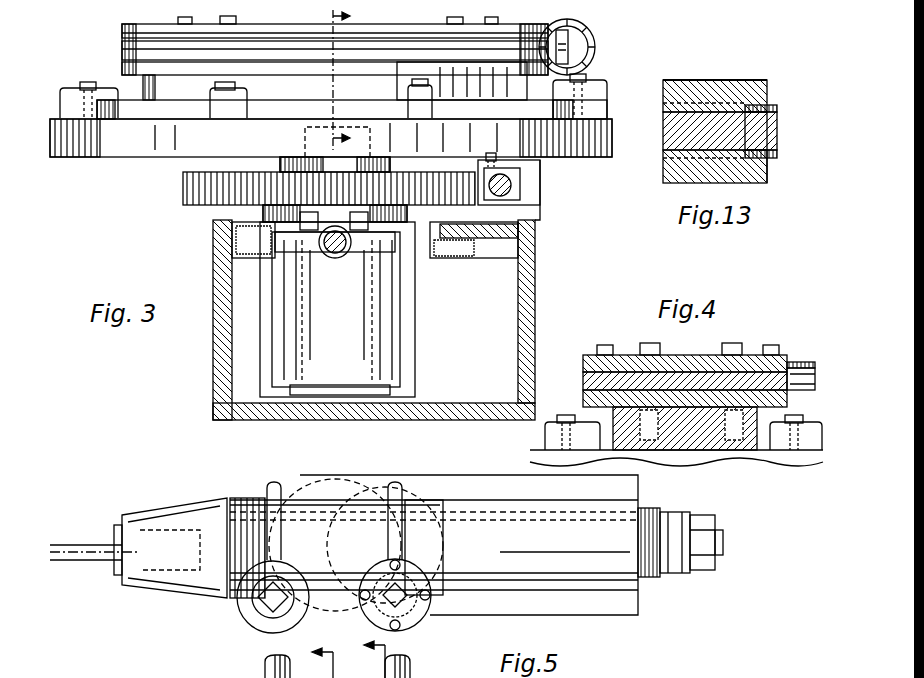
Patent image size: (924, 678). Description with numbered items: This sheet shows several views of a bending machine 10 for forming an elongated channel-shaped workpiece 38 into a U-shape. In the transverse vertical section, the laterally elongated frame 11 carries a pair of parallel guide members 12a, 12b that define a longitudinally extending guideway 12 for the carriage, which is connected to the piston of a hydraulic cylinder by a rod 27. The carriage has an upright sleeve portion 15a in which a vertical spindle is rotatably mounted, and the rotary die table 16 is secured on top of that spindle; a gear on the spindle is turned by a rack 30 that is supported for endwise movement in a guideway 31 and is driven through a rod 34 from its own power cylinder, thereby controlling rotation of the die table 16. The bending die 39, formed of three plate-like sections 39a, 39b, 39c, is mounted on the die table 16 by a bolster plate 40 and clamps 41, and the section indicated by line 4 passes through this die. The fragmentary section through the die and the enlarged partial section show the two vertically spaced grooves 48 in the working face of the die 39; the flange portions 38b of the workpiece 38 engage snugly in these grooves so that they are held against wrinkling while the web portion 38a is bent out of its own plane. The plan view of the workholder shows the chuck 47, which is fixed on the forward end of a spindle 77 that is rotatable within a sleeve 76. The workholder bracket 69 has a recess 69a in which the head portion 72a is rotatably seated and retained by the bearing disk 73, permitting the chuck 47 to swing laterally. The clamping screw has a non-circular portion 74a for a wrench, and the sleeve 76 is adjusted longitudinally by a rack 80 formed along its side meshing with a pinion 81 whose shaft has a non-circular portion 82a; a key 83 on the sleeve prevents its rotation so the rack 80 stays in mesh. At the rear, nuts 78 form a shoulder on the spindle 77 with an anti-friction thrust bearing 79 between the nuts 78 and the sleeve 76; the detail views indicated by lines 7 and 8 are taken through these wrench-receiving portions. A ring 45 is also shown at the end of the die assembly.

In FIG. 3, the bending die 39 is at (122, 28).
In FIG. 13, the bending die 39 is at (740, 82).
In FIG. 4, the bending die 39 is at (682, 356).
In FIG. 13, the plate-like section 39a is at (668, 138).
In FIG. 4, the plate-like section 39a is at (584, 378).
In FIG. 13, the plate-like section 39b is at (686, 82).
In FIG. 4, the plate-like section 39b is at (628, 356).
In FIG. 13, the plate-like section 39c is at (668, 172).
In FIG. 4, the plate-like section 39c is at (584, 398).
In FIG. 3, the bolster plate 40 is at (143, 80).
In FIG. 4, the bolster plate 40 is at (762, 462).
In FIG. 3, the clamps 41 is at (60, 90).
In FIG. 4, the clamps 41 is at (812, 460).
In FIG. 3, the ring 45 is at (595, 30).
In FIG. 3, the workpiece 38 is at (568, 47).
In FIG. 13, the workpiece 38 is at (780, 120).
In FIG. 4, the workpiece 38 is at (816, 392).
In FIG. 5, the workpiece 38 is at (70, 548).
In FIG. 13, the web portion 38a is at (780, 146).
In FIG. 13, the flange portions 38b is at (770, 170).
In FIG. 3, the grooves 48 is at (408, 66).
In FIG. 13, the grooves 48 is at (778, 106).
In FIG. 4, the grooves 48 is at (804, 366).
In FIG. 3, the rotary die table 16 is at (612, 126).
In FIG. 4, the rotary die table 16 is at (730, 456).
In FIG. 3, the section line 4- 4 is at (347, 79).
In FIG. 3, the rod 34 is at (540, 170).
In FIG. 3, the guideway 31 is at (520, 186).
In FIG. 3, the rack 30 is at (536, 204).
In FIG. 3, the bending machine 10 is at (535, 302).
In FIG. 3, the frame 11 is at (535, 274).
In FIG. 3, the guideway 12 is at (262, 300).
In FIG. 3, the guide member 12a is at (232, 242).
In FIG. 3, the guide member 12b is at (452, 246).
In FIG. 3, the upright sleeve portion 15a is at (392, 322).
In FIG. 3, the rod 27 is at (342, 258).
In FIG. 5, the chuck 47 is at (190, 504).
In FIG. 5, the bracket 69 is at (626, 612).
In FIG. 5, the recess 69a is at (354, 484).
In FIG. 5, the head portion 72a is at (298, 486).
In FIG. 5, the bearing disk 73 is at (408, 542).
In FIG. 5, the non-circular portion 74a is at (250, 608).
In FIG. 5, the non-circular portion 82a is at (418, 618).
In FIG. 5, the sleeve 76 is at (496, 498).
In FIG. 5, the key 83 is at (550, 510).
In FIG. 5, the spindle 77 is at (604, 520).
In FIG. 5, the pinion 81 is at (432, 602).
In FIG. 5, the rack 80 is at (540, 583).
In FIG. 5, the anti-friction thrust bearing 79 is at (668, 576).
In FIG. 5, the nuts 78 is at (700, 574).
In FIG. 5, the section line 7- 7 is at (299, 660).
In FIG. 5, the section line 8- 8 is at (383, 656).